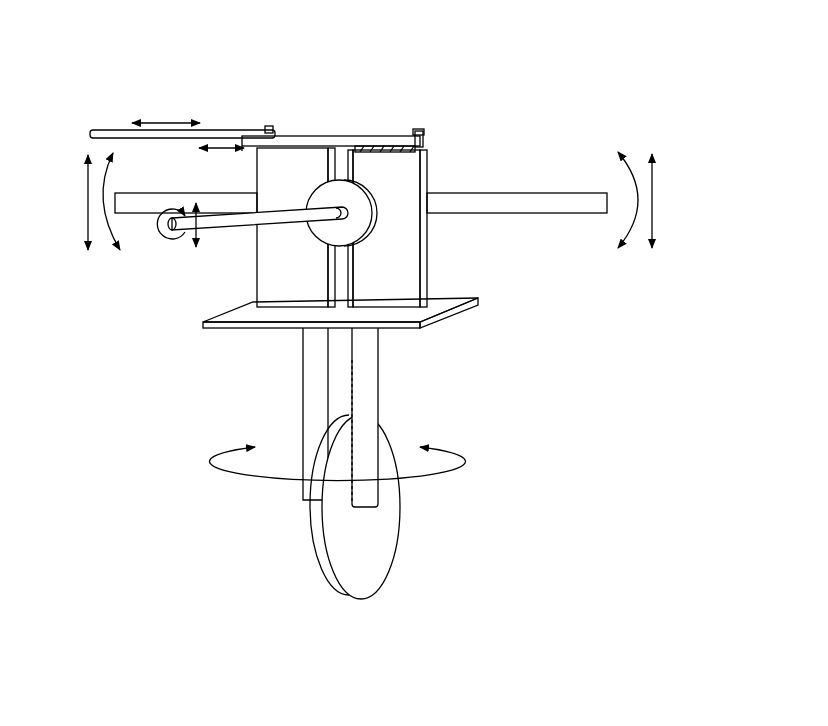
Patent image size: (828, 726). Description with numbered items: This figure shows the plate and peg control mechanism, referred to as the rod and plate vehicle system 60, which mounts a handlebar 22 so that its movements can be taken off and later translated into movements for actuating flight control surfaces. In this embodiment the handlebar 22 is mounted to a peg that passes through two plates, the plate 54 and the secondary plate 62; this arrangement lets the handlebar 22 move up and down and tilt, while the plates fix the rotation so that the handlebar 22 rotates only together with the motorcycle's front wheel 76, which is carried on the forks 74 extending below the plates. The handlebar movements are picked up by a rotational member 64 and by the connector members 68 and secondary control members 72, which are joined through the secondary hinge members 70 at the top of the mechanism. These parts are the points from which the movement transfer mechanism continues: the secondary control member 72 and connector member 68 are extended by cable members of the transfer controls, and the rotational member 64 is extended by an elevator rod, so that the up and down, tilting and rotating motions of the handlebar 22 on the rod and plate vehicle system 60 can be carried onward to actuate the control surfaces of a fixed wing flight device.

The rod and plate vehicle system 60 is at (530, 78).
The handlebar 22 is at (550, 201).
The plate 54 is at (400, 265).
The secondary plate 62 is at (481, 306).
The rotational member 64 is at (247, 218).
The connector members 68 is at (271, 125).
The secondary hinge members 70 is at (278, 135).
The secondary control members 72 is at (367, 146).
The forks 74 is at (363, 397).
The front wheel 76 is at (363, 547).